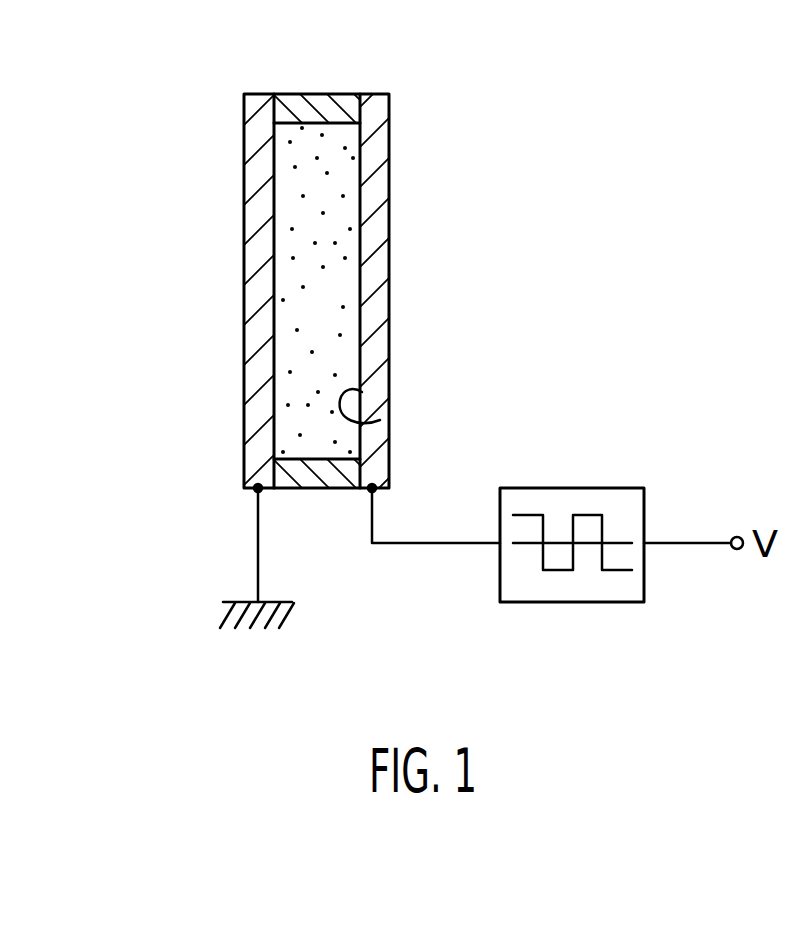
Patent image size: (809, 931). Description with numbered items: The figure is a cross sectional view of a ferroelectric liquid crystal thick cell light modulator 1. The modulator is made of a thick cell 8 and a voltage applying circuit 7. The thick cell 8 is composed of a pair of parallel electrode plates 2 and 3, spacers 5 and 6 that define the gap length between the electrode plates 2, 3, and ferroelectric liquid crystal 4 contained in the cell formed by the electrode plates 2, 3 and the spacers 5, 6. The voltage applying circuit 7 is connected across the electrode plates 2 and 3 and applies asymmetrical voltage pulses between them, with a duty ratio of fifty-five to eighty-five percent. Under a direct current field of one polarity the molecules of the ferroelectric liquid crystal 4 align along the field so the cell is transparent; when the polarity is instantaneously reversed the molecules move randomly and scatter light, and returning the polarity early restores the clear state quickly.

The liquid crystal thick cell light modulator 1 is at (128, 91).
The electrode plate 2 is at (373, 180).
The electrode plate 3 is at (253, 185).
The ferroelectric liquid crystal 4 is at (332, 287).
The spacer 5 is at (314, 100).
The spacer 6 is at (309, 490).
The voltage applying circuit 7 is at (590, 603).
The thick cell 8 is at (380, 420).